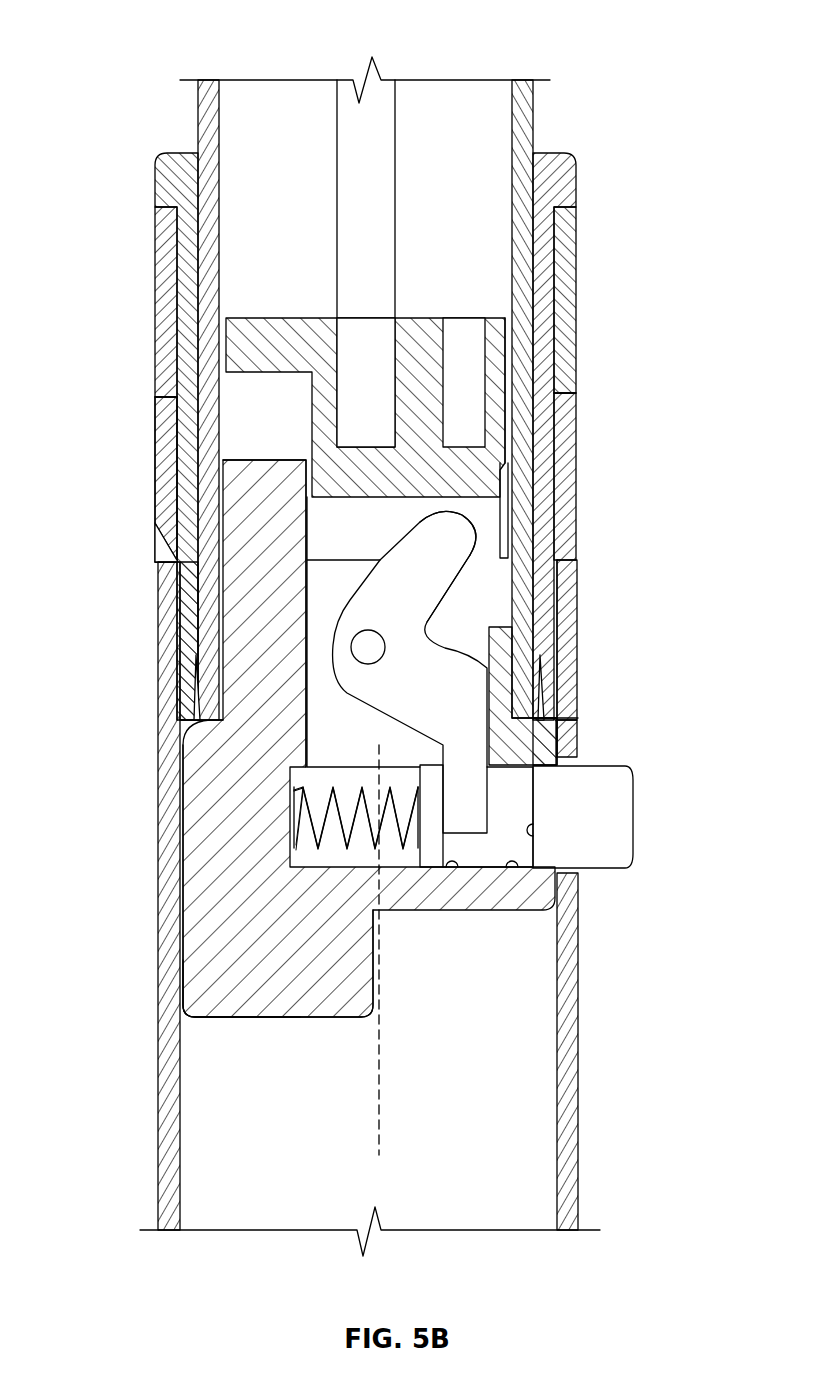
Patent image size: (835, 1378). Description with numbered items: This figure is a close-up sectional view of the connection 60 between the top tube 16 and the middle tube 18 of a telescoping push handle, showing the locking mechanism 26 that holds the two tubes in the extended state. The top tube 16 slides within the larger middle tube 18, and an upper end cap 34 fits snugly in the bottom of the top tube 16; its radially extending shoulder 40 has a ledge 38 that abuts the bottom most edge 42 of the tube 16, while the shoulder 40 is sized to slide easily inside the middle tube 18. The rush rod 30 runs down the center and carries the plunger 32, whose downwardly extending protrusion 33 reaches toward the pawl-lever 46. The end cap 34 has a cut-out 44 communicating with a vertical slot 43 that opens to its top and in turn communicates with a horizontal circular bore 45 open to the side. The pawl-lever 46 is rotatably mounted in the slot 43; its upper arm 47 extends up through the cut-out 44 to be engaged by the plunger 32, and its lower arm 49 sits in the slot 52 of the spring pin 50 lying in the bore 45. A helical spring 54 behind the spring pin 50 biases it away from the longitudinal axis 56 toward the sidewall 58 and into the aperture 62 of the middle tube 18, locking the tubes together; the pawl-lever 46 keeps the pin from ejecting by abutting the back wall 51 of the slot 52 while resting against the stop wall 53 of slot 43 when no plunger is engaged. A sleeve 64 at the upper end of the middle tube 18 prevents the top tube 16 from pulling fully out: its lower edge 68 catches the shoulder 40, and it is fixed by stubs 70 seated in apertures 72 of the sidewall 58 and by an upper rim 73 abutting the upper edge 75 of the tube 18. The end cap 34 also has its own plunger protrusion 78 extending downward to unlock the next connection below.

The top tube 16 is at (232, 135).
The middle tube 18 is at (193, 1103).
The locking mechanism 26 is at (642, 576).
The rush rod 30 is at (385, 92).
The plunger 32 is at (237, 352).
The downwardly extending protrusion 33 is at (473, 477).
The upper end cap 34 is at (215, 917).
The ledge 38 is at (192, 718).
The shoulder 40 is at (197, 793).
The bottom most edge 42 is at (235, 735).
The slot 43 is at (312, 578).
The cut-out 44 is at (323, 530).
The bore 45 is at (512, 860).
The pawl-lever 46 is at (455, 535).
The upper arm 47 is at (455, 562).
The lower arm 49 is at (470, 803).
The spring pin 50 is at (617, 835).
The back wall 51 is at (452, 860).
The slot 52 is at (535, 835).
The stop wall 53 is at (503, 667).
The helical spring 54 is at (287, 800).
The longitudinal axis 56 is at (386, 1105).
The sidewall 58 is at (572, 1058).
The connection 60 is at (138, 34).
The aperture 62 is at (577, 757).
The sleeve 64 is at (578, 425).
The lower edge 68 is at (190, 725).
The stub 70 is at (170, 440).
The aperture 72 is at (172, 398).
The upper rim 73 is at (176, 166).
The upper edge 75 is at (165, 215).
The plunger protrusion 78 is at (200, 973).